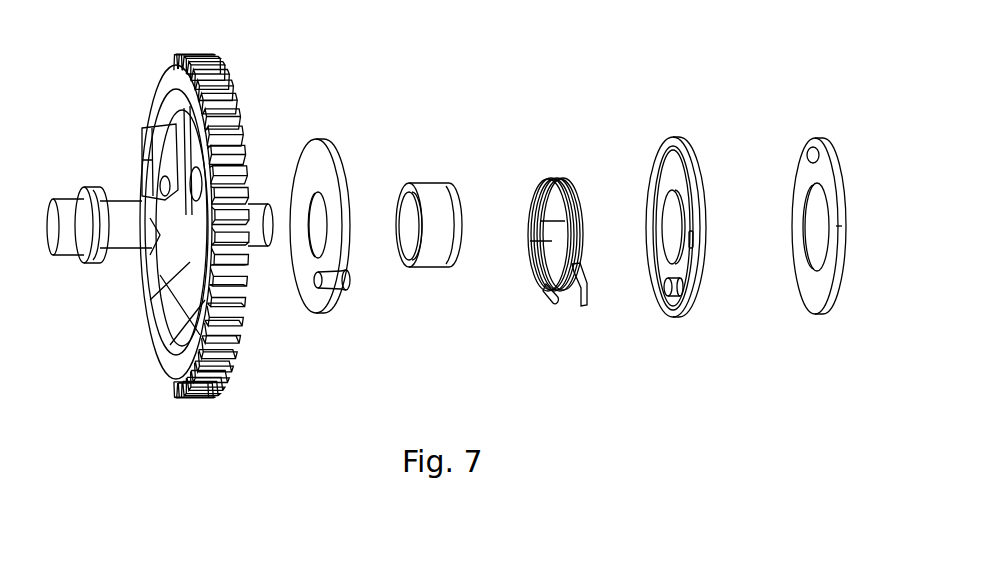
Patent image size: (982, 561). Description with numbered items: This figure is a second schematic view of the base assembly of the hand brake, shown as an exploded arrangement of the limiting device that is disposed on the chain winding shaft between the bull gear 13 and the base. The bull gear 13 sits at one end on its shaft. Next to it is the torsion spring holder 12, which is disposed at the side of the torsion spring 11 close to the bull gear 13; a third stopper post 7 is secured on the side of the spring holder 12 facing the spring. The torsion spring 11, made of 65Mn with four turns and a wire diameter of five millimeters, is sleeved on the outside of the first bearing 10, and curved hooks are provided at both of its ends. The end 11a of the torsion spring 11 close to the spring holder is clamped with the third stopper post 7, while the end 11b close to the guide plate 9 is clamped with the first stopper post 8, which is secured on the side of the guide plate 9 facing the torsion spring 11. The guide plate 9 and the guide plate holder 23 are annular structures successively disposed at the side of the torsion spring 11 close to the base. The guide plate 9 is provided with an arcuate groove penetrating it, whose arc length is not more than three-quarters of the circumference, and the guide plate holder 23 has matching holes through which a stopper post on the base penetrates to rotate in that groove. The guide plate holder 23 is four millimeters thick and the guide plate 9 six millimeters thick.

The bull gear 13 is at (240, 125).
The torsion spring holder 12 is at (346, 218).
The third stopper post 7 is at (325, 282).
The first bearing 10 is at (422, 202).
The torsion spring 11 is at (549, 223).
The end of the torsion spring 11a is at (558, 300).
The end of the torsion spring 11b is at (577, 303).
The guide plate 9 is at (653, 232).
The first stopper post 8 is at (670, 293).
The guide plate holder 23 is at (823, 283).